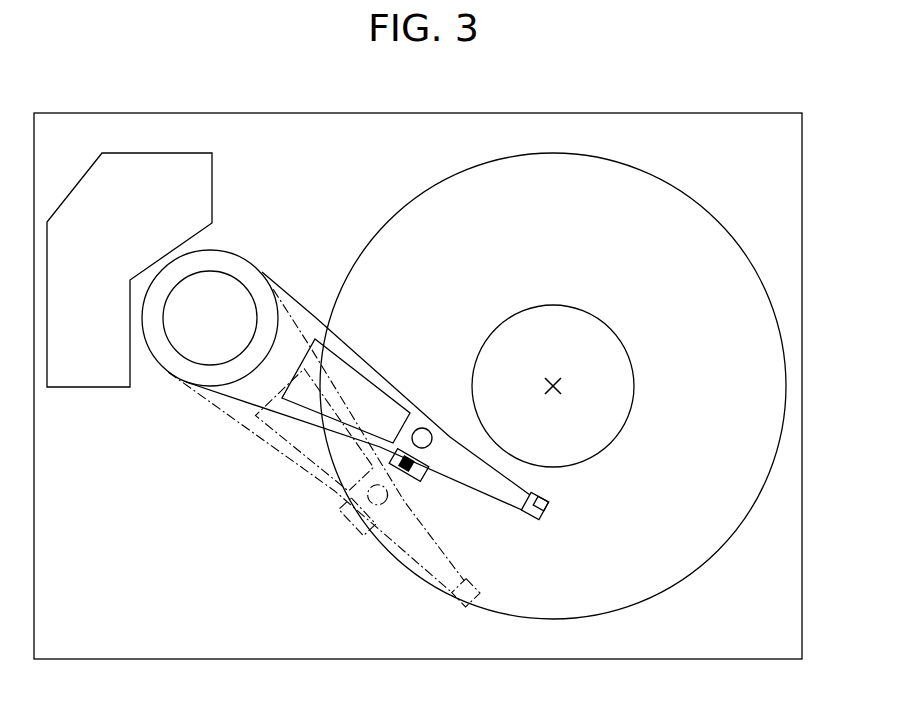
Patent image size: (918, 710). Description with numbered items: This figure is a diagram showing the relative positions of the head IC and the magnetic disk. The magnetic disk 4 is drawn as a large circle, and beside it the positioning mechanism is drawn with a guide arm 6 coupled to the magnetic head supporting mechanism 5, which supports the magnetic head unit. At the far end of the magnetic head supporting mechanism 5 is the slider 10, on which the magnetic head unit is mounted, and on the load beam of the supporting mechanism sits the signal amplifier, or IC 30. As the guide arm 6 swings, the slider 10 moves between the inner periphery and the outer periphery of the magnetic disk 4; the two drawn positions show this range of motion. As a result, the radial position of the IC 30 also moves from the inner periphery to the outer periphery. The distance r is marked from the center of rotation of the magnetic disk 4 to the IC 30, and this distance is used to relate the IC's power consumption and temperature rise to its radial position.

The magnetic disk 4 is at (697, 231).
The magnetic head supporting mechanism 5 is at (375, 429).
The guide arm 6 is at (312, 330).
The slider 10 is at (548, 509).
The signal amplifier (IC) 30 is at (413, 478).
The distance r is at (545, 391).